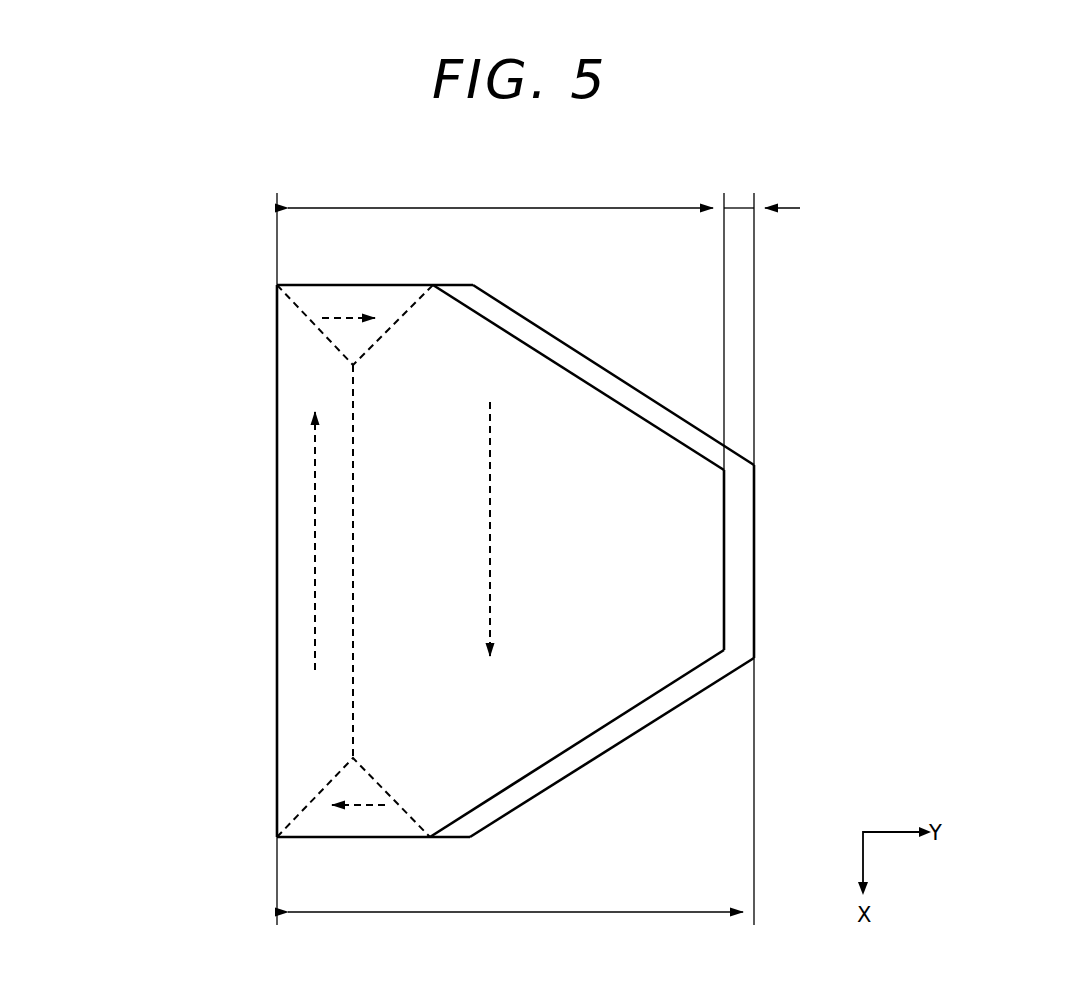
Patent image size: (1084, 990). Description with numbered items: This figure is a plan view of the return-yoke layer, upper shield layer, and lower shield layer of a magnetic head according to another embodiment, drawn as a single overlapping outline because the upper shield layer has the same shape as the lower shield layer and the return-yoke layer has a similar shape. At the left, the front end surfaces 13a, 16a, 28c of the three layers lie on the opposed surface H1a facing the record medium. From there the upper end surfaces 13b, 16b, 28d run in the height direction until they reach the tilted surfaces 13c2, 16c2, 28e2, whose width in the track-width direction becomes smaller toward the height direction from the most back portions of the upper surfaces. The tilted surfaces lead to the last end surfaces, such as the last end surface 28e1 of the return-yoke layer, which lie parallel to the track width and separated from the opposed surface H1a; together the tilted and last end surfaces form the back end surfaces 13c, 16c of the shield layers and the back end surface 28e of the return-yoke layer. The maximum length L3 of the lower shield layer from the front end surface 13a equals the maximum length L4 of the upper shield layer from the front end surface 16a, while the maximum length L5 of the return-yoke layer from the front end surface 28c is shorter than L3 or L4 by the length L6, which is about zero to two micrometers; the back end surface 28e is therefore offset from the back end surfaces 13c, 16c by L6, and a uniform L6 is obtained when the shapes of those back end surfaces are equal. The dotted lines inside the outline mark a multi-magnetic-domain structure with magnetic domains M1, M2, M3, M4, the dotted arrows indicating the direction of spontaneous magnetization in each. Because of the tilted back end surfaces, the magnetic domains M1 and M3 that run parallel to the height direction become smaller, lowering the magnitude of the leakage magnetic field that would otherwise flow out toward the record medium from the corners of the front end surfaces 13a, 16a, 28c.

The front end surface of the lower shield layer 13a is at (162, 561).
The front end surface of the upper shield layer 16a is at (162, 561).
The front end surface of the return-yoke layer 28c is at (162, 561).
The opposed surface H1a is at (277, 520).
The upper end surface of the lower shield layer 13b is at (407, 560).
The upper end surface of the upper shield layer 16b is at (407, 560).
The upper end surface of the return-yoke layer 28d is at (387, 285).
The back end surface of the lower shield layer 13c is at (681, 552).
The back end surface of the upper shield layer 16c is at (681, 552).
The tilted surface of the lower shield layer 13c2 is at (592, 552).
The tilted surface of the upper shield layer 16c2 is at (592, 552).
The back end surface of the return-yoke layer 28e is at (650, 552).
The last end surface of the return-yoke layer 28e1 is at (724, 631).
The tilted surface of the return-yoke layer 28e2 is at (553, 355).
The magnetic domain M1 is at (313, 818).
The magnetic domain M2 is at (300, 727).
The magnetic domain M3 is at (316, 305).
The magnetic domain M4 is at (575, 718).
The maximum length of the lower shield layer L3 is at (515, 799).
The maximum length of the upper shield layer L4 is at (515, 799).
The maximum length of the return-yoke layer L5 is at (500, 327).
The length difference L6 is at (762, 318).